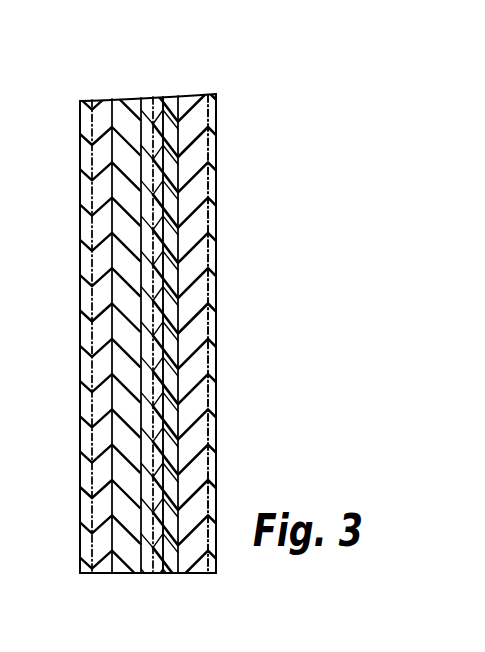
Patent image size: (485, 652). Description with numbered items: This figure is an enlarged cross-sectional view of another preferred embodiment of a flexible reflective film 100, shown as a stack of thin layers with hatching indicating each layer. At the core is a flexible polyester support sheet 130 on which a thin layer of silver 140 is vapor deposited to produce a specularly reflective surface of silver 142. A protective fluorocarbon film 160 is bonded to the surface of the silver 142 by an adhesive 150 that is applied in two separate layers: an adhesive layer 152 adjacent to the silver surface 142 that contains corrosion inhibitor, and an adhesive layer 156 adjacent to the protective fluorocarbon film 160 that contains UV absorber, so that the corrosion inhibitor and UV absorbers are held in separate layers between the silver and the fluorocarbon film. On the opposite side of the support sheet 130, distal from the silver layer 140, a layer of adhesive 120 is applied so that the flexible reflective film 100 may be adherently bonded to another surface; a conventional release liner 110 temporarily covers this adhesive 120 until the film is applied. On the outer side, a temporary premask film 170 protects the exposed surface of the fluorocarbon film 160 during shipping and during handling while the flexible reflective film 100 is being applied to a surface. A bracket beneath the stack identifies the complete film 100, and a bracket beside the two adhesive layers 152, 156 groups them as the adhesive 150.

The flexible reflective film 100 is at (223, 577).
The release liner 110 is at (78, 118).
The adhesive 120 is at (98, 108).
The flexible support sheet 130 is at (125, 102).
The layer of silver 140 is at (143, 99).
The reflective surface of silver 142 is at (170, 99).
The adhesive 150 is at (298, 38).
The adhesive layer 152 is at (214, 132).
The adhesive layer 156 is at (165, 167).
The fluorocarbon film 160 is at (193, 188).
The premask film 170 is at (215, 233).